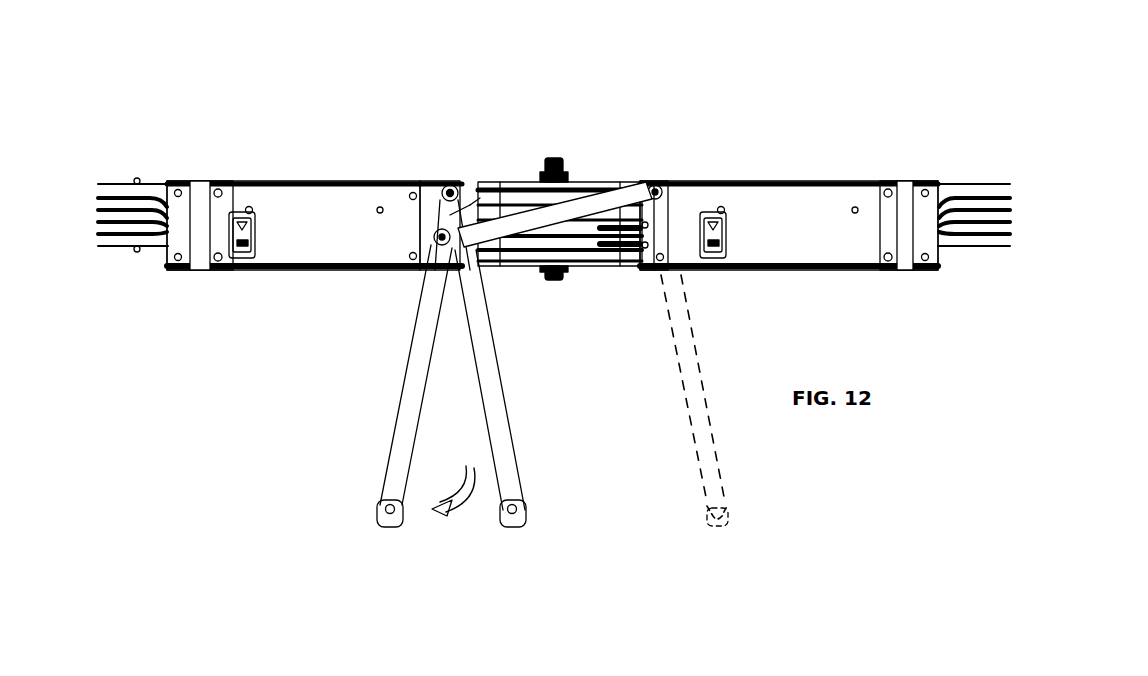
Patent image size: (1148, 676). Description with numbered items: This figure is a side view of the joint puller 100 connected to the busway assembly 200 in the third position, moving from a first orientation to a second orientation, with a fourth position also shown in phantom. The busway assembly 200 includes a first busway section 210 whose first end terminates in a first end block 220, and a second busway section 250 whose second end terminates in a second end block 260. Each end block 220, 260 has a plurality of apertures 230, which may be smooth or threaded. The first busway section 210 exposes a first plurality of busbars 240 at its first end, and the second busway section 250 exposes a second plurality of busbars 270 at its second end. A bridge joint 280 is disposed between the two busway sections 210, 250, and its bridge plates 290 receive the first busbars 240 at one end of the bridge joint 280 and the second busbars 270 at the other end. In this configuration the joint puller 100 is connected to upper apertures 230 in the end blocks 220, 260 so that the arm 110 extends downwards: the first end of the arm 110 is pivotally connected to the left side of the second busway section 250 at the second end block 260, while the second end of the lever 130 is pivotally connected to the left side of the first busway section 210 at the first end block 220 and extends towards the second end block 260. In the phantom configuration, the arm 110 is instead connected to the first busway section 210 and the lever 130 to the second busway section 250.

The joint puller 100 is at (308, 522).
The arm 110 is at (412, 393).
The lever 130 is at (492, 226).
The busway assembly 200 is at (886, 152).
The first busway section 210 is at (812, 179).
The first end block 220 is at (683, 185).
The apertures 230 is at (677, 273).
The first plurality of busbars 240 is at (620, 236).
The second busway section 250 is at (300, 183).
The second end block 260 is at (420, 180).
The second plurality of busbars 270 is at (475, 183).
The bridge joint 280 is at (530, 181).
The bridge plates 290 is at (585, 179).